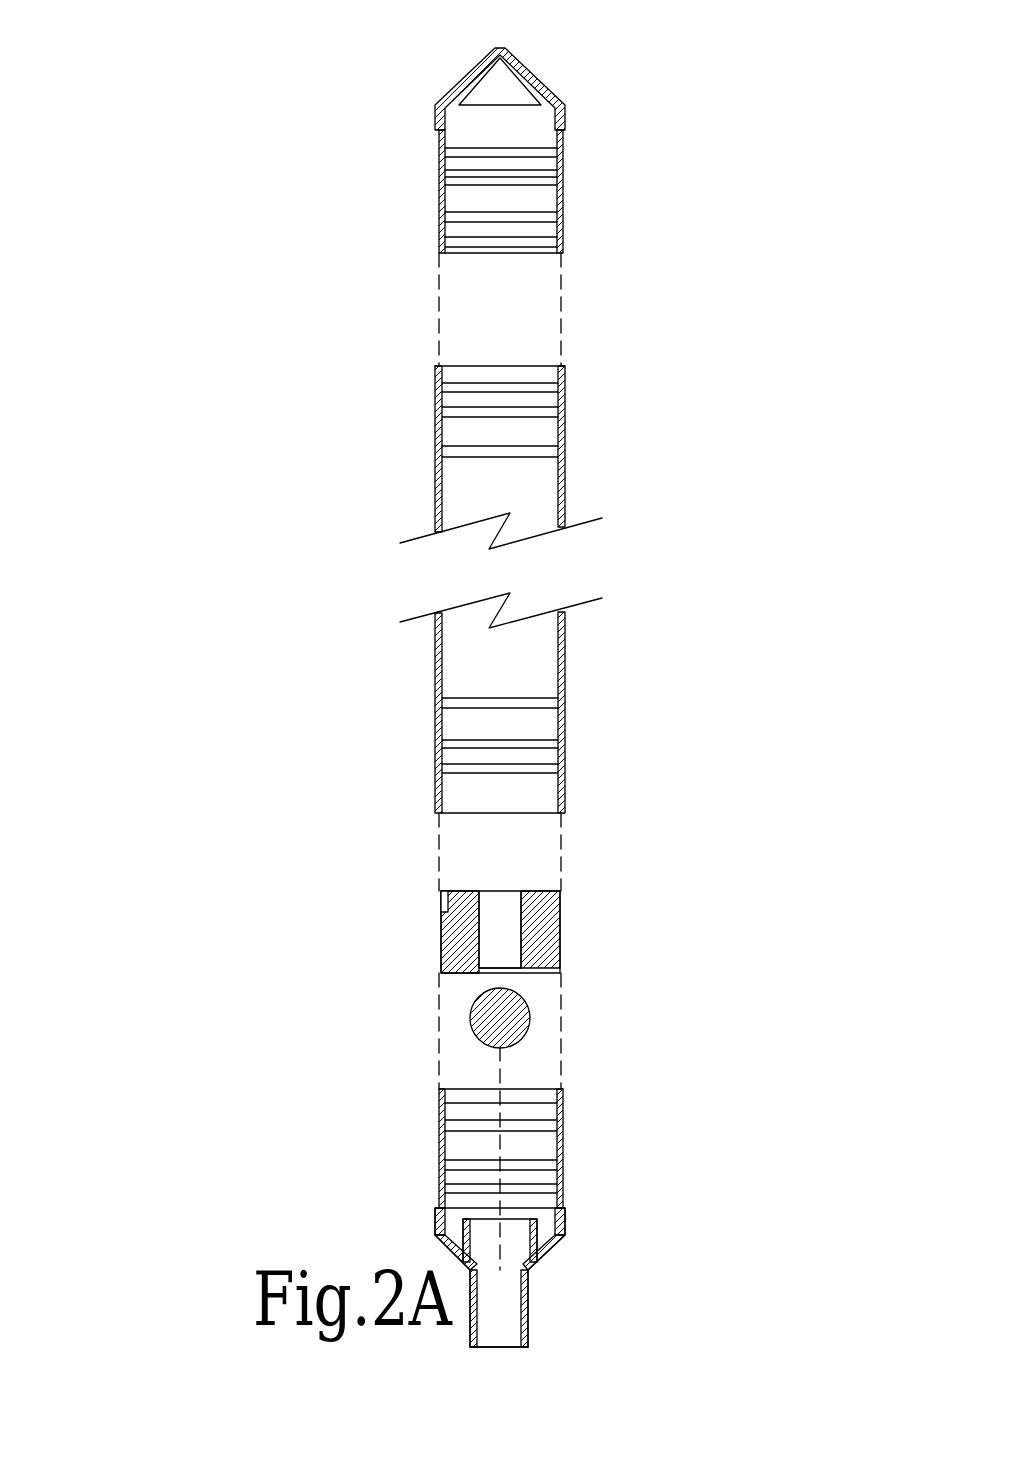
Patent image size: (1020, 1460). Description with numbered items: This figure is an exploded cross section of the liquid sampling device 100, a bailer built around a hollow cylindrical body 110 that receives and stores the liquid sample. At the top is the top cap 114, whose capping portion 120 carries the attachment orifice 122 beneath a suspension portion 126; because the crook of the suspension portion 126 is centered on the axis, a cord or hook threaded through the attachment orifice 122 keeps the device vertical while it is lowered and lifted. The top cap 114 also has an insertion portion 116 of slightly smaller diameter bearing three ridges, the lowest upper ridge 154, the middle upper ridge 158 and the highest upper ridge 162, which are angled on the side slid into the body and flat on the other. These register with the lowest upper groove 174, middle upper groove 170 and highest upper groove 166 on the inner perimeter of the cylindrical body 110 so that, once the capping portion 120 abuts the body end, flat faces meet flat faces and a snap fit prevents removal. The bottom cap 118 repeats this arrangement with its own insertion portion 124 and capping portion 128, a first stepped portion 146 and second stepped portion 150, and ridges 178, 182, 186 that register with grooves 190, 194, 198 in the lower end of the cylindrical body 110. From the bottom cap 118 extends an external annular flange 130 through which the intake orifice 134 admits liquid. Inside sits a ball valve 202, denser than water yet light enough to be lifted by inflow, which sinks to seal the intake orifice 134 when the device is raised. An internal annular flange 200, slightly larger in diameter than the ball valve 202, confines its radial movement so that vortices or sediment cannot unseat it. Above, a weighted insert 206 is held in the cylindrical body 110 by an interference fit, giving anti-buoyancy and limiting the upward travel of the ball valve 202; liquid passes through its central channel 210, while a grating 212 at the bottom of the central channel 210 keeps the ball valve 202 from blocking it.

The liquid sampling device 100 is at (170, 257).
The cylindrical body 110 is at (515, 574).
The top cap 114 is at (515, 128).
The insertion portion 116 is at (540, 228).
The bottom cap 118 is at (505, 1199).
The capping portion 120 is at (521, 71).
The attachment orifice 122 is at (500, 80).
The insertion portion 124 is at (534, 1109).
The suspension portion 126 is at (497, 48).
The capping portion 128 is at (570, 1216).
The external annular flange 130 is at (505, 1308).
The intake orifice 134 is at (500, 1347).
The first stepped portion 146 is at (439, 1106).
The second stepped portion 150 is at (439, 1092).
The lowest upper ridge 154 is at (439, 210).
The middle upper ridge 158 is at (439, 188).
The highest upper ridge 162 is at (439, 150).
The highest upper groove 166 is at (439, 377).
The middle upper groove 170 is at (439, 407).
The lowest upper groove 174 is at (439, 447).
The ridge 178 is at (439, 1128).
The ridge 182 is at (439, 1170).
The ridge 186 is at (439, 1190).
The groove 190 is at (439, 773).
The groove 194 is at (439, 747).
The groove 198 is at (439, 708).
The internal annular flange 200 is at (513, 1236).
The ball valve 202 is at (503, 1024).
The weighted insert 206 is at (454, 953).
The central channel 210 is at (505, 930).
The grating 212 is at (455, 993).